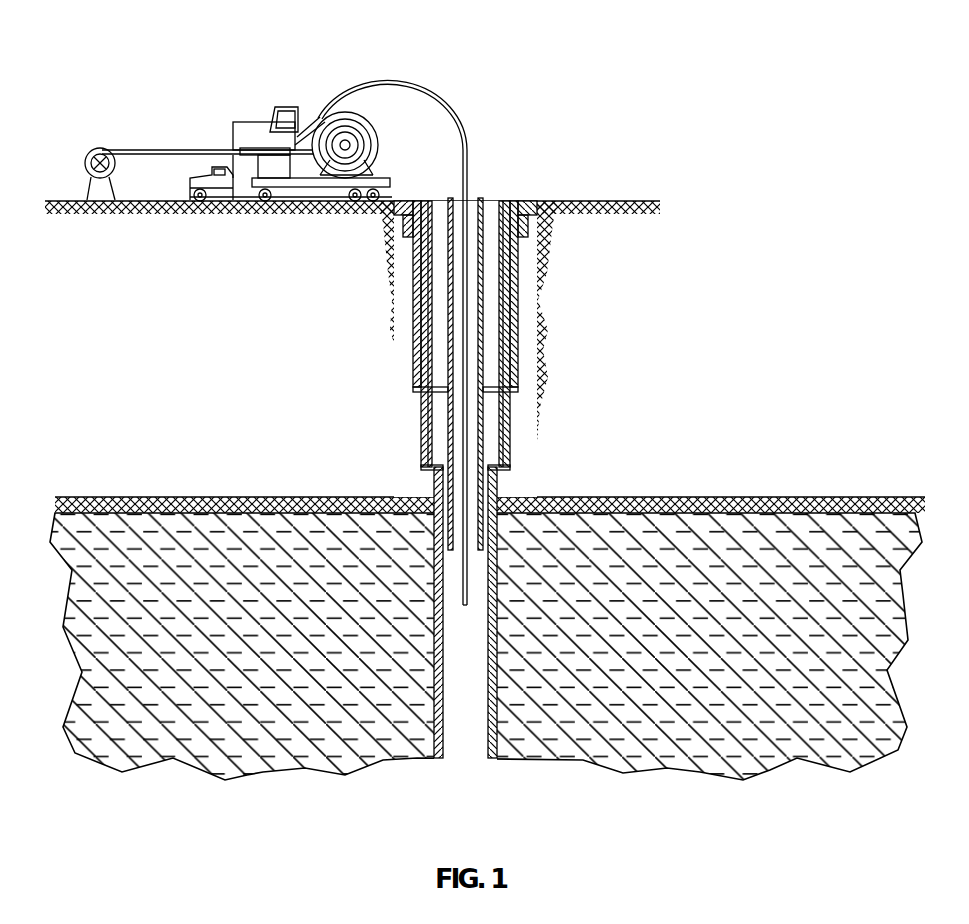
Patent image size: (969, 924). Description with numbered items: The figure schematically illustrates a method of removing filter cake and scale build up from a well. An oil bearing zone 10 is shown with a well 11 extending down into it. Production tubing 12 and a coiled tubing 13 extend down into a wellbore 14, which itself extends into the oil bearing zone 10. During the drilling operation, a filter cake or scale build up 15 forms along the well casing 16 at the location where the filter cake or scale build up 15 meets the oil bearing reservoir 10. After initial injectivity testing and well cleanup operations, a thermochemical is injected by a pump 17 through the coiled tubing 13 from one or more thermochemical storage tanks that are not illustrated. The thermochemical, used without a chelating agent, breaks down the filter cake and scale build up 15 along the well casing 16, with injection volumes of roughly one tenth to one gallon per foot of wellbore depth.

The oil bearing zone 10 is at (640, 592).
The well 11 is at (510, 448).
The production tubing 12 is at (497, 297).
The coiled tubing 13 is at (347, 113).
The wellbore 14 is at (477, 230).
The filter cake or scale build up 15 is at (446, 668).
The well casing 16 is at (437, 490).
The pump 17 is at (84, 161).